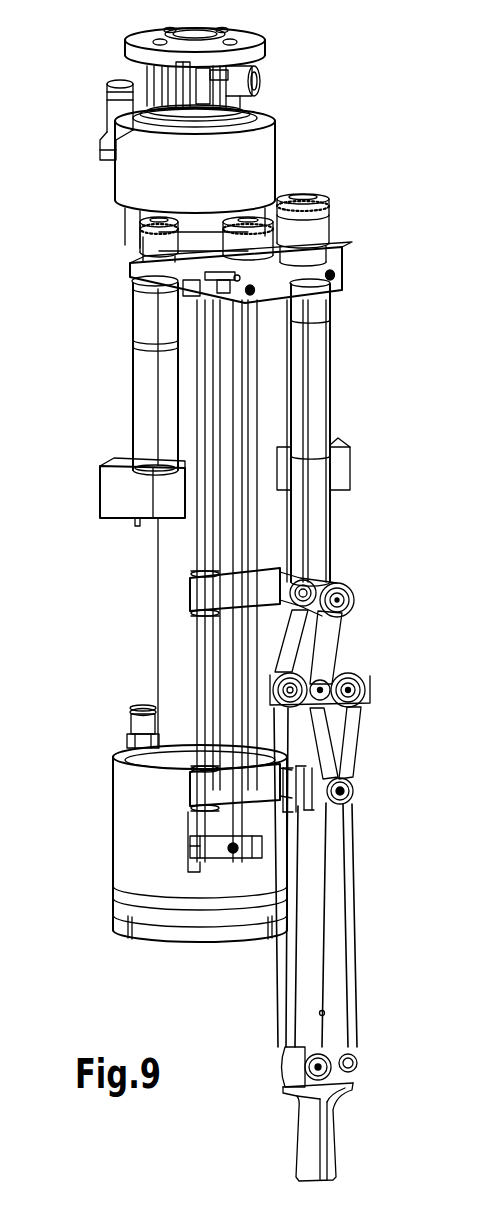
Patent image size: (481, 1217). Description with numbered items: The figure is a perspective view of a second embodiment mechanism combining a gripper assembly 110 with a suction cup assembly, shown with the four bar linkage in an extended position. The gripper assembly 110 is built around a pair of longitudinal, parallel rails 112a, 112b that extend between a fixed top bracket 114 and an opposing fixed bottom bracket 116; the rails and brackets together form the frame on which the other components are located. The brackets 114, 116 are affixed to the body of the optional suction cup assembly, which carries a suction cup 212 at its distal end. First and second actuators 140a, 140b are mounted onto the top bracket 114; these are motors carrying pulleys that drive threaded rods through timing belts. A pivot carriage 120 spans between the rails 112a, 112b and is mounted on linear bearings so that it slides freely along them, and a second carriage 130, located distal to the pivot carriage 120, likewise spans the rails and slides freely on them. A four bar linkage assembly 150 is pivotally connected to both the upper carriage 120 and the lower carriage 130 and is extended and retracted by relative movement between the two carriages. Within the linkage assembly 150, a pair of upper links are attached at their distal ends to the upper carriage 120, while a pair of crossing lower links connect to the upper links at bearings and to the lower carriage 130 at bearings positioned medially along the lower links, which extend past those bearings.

The gripper assembly 110 is at (393, 34).
The fixed top bracket 114 is at (333, 240).
The first actuator 140a is at (147, 318).
The second actuator 140b is at (333, 357).
The first rail 112a is at (208, 405).
The second rail 112b is at (318, 520).
The pivot carriage 120 is at (200, 583).
The second carriage 130 is at (207, 789).
The fixed bottom bracket 116 is at (210, 850).
The suction cup 212 is at (205, 943).
The four bar linkage assembly 150 is at (382, 1138).